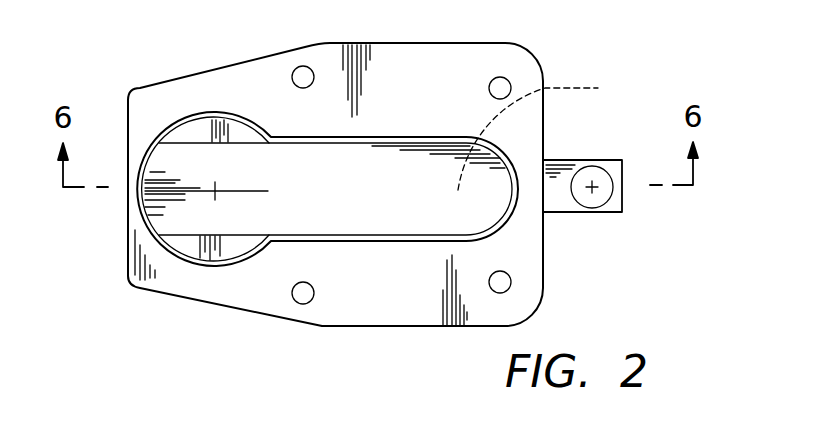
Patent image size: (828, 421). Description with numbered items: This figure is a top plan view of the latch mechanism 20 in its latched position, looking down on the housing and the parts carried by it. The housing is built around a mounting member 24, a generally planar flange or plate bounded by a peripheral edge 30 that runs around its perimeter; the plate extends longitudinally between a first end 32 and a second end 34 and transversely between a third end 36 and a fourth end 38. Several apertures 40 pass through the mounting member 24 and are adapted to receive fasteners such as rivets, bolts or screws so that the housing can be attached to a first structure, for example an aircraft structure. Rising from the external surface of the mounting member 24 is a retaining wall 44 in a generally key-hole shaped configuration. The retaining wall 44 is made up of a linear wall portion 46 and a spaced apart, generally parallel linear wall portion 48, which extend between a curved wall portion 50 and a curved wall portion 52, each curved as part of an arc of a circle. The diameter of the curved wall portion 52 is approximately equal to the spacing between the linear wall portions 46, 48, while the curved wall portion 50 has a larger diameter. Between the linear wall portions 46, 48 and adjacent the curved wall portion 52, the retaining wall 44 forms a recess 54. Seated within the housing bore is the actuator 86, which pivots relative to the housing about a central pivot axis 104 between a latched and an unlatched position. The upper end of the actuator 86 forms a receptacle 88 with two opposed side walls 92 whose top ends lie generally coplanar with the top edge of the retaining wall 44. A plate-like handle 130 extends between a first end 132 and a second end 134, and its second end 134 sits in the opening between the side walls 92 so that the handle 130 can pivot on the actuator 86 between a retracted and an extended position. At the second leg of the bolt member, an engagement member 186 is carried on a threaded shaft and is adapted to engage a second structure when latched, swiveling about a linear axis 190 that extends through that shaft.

The latch mechanism 20 is at (616, 54).
The mounting member 24 is at (413, 62).
The peripheral edge 30 is at (545, 82).
The first end 32 is at (547, 100).
The second end 34 is at (128, 123).
The third end 36 is at (414, 327).
The fourth end 38 is at (385, 43).
The apertures 40 is at (304, 66).
The retaining wall 44 is at (430, 135).
The linear wall portion 46 is at (368, 137).
The linear wall portion 48 is at (358, 237).
The curved wall portion 50 is at (198, 118).
The curved wall portion 52 is at (500, 230).
The recess 54 is at (546, 133).
The actuator 86 is at (183, 137).
The receptacle 88 is at (190, 248).
The side walls 92 is at (234, 128).
The central pivot axis 104 is at (218, 190).
The handle 130 is at (323, 227).
The first end 132 is at (492, 212).
The second end 134 is at (163, 225).
The engagement member 186 is at (600, 167).
The linear axis 190 is at (603, 203).